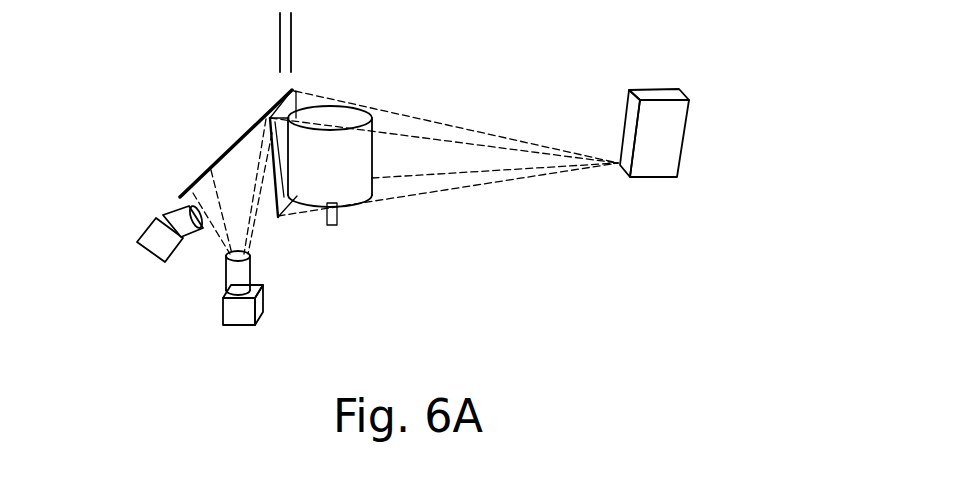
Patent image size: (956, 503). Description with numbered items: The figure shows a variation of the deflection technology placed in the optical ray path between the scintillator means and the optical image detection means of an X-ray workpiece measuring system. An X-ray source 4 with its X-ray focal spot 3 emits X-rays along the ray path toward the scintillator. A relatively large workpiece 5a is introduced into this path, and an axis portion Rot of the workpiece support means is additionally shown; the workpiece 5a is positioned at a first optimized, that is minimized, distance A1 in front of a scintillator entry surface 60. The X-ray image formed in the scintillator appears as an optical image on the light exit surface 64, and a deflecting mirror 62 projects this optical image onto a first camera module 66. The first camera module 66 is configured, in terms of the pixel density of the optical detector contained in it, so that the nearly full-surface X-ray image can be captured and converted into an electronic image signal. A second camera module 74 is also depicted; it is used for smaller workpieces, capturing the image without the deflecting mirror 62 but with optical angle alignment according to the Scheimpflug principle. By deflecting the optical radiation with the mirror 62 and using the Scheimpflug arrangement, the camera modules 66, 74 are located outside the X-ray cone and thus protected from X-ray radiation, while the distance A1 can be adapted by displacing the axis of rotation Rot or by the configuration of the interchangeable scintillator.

The first optimized distance A1 is at (232, 42).
The deflecting mirror 62 is at (219, 156).
The scintillator entry surface 60 is at (292, 198).
The light exit surface 64 is at (276, 208).
The X-ray focal spot 3 is at (618, 165).
The relatively large workpiece 5a is at (364, 186).
The axis portion of the workpiece support means Rot is at (330, 227).
The X-ray source 4 is at (677, 143).
The first camera module 66 is at (238, 318).
The second camera module 74 is at (152, 241).